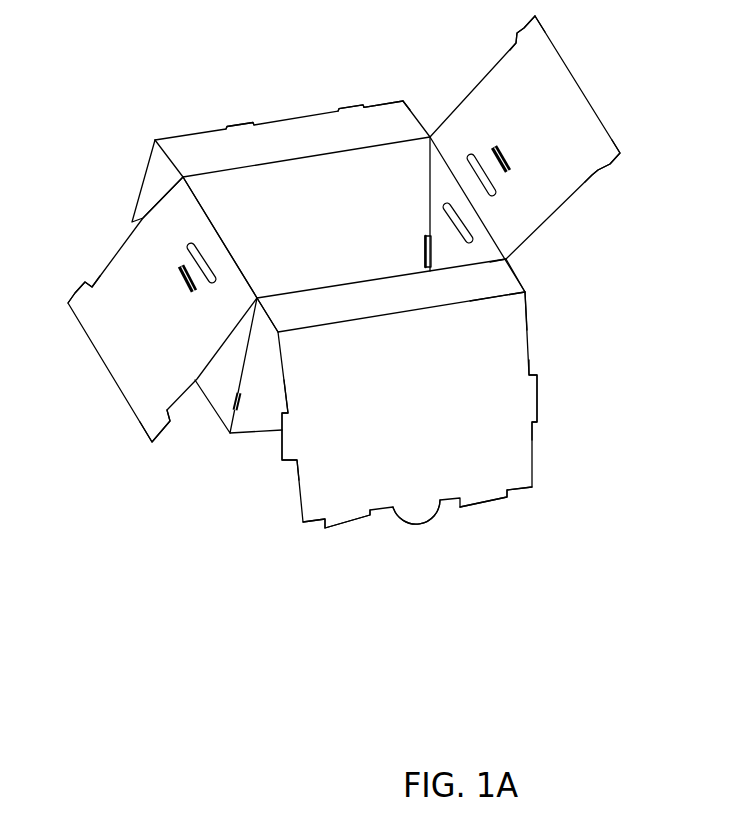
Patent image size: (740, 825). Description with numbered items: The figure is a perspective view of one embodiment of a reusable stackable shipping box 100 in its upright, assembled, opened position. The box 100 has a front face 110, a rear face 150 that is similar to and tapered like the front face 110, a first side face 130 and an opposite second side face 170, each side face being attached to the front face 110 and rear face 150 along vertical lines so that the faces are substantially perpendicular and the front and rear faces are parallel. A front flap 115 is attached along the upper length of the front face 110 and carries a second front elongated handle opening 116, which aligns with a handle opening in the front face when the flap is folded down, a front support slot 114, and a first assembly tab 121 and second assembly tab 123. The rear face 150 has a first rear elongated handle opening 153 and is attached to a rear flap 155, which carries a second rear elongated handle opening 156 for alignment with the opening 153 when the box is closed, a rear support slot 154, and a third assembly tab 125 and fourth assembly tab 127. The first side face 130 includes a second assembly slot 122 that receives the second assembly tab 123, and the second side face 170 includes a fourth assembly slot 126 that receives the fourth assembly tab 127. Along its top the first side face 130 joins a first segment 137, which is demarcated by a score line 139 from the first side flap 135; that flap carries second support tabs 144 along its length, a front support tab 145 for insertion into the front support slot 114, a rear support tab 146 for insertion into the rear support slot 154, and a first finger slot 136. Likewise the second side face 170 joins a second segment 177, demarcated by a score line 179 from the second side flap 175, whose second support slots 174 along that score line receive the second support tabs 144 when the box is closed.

The box 100 is at (146, 568).
The front face 110 is at (230, 378).
The front support slot 114 is at (178, 286).
The front flap 115 is at (112, 372).
The second front elongated handle opening 116 is at (202, 260).
The first assembly tab 121 is at (78, 297).
The second assembly slot 122 is at (233, 398).
The second assembly tab 123 is at (157, 448).
The third assembly tab 125 is at (604, 166).
The fourth assembly slot 126 is at (425, 250).
The fourth assembly tab 127 is at (523, 30).
The first side face 130 is at (257, 422).
The first side flap 135 is at (513, 437).
The first finger slot 136 is at (419, 510).
The first segment 137 is at (514, 288).
The score line 139 is at (500, 300).
The second support tabs 144 is at (340, 520).
The front support tab 145 is at (292, 437).
The rear support tab 146 is at (540, 395).
The rear face 150 is at (437, 168).
The first rear elongated handle opening 153 is at (465, 231).
The rear support slot 154 is at (510, 176).
The rear flap 155 is at (585, 92).
The second rear elongated handle opening 156 is at (475, 160).
The second side face 170 is at (245, 168).
The second support slots 174 is at (240, 128).
The second side flap 175 is at (143, 187).
The second segment 177 is at (203, 135).
The score line 179 is at (392, 100).